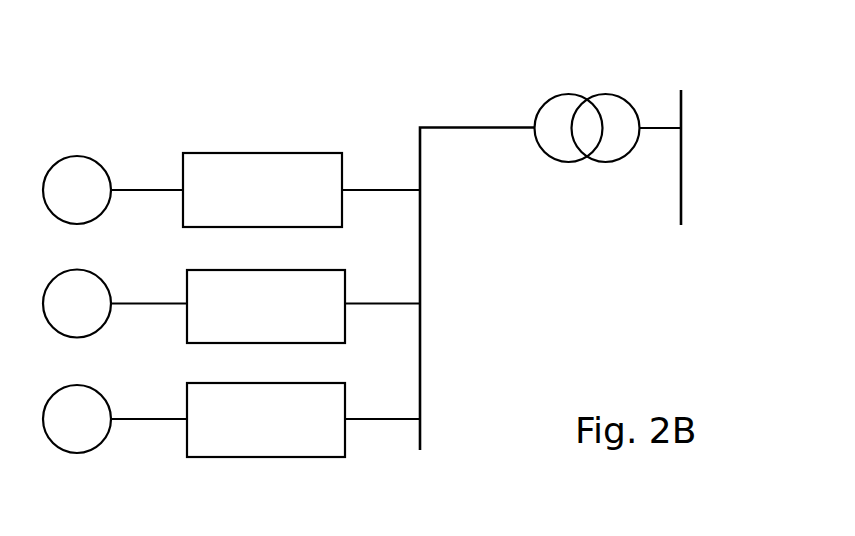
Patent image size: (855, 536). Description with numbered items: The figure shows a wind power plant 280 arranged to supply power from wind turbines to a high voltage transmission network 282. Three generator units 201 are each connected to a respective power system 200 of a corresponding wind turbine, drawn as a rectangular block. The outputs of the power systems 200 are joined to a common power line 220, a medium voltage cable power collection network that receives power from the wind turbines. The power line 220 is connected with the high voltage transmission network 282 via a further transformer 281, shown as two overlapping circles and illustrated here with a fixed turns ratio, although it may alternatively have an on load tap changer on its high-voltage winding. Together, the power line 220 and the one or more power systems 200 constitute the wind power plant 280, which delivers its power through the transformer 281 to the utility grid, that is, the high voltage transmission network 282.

The power system 200 is at (267, 148).
The generator 201 is at (63, 153).
The power line 220 is at (397, 187).
The wind power plant 280 is at (362, 77).
The transformer 281 is at (598, 87).
The high voltage transmission network 282 is at (688, 112).